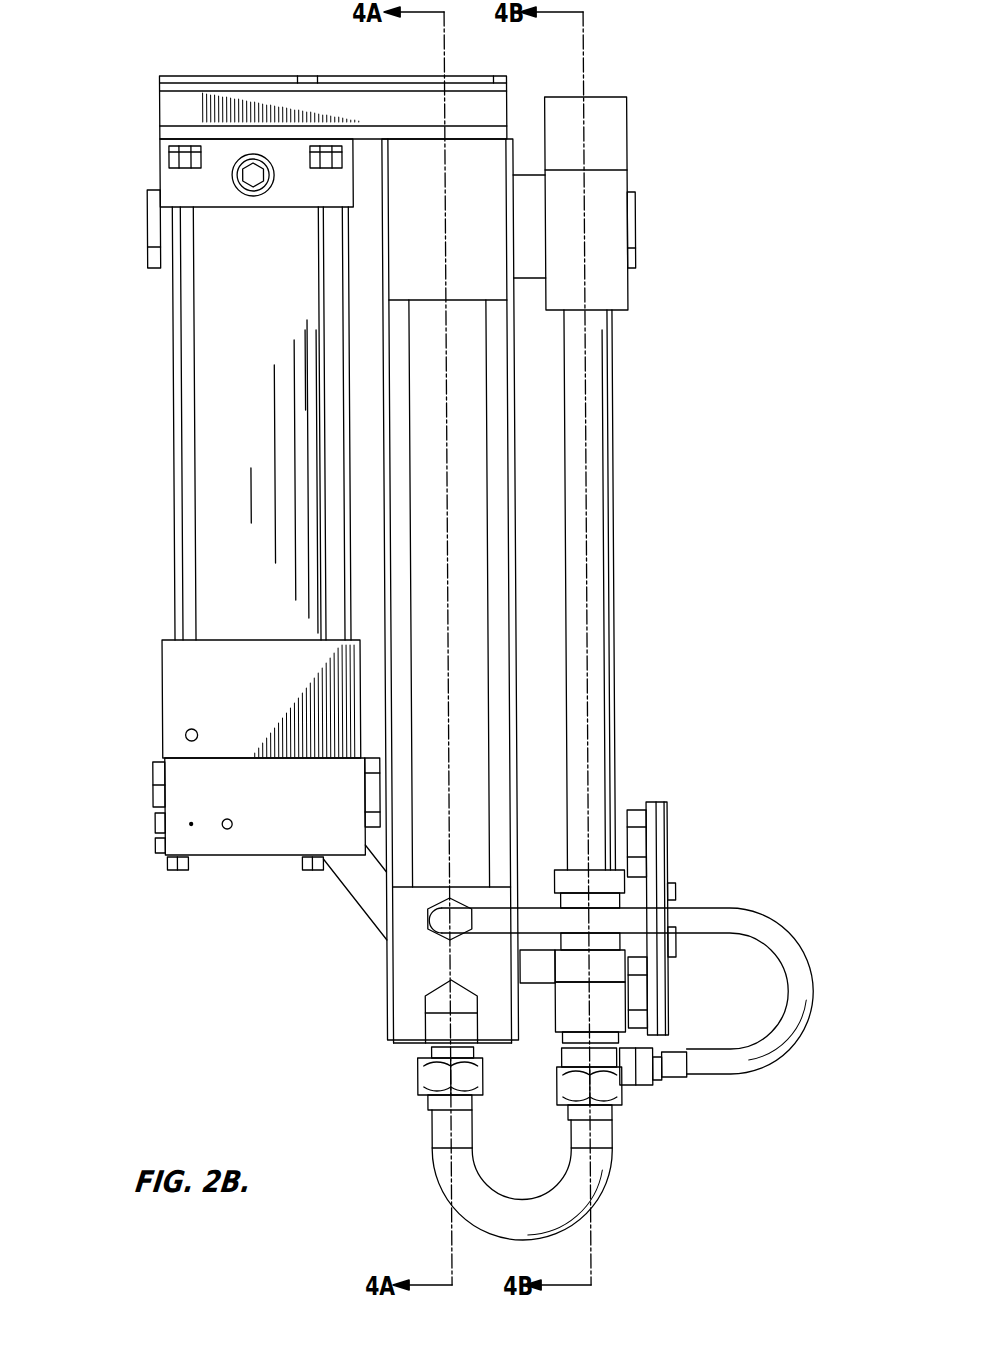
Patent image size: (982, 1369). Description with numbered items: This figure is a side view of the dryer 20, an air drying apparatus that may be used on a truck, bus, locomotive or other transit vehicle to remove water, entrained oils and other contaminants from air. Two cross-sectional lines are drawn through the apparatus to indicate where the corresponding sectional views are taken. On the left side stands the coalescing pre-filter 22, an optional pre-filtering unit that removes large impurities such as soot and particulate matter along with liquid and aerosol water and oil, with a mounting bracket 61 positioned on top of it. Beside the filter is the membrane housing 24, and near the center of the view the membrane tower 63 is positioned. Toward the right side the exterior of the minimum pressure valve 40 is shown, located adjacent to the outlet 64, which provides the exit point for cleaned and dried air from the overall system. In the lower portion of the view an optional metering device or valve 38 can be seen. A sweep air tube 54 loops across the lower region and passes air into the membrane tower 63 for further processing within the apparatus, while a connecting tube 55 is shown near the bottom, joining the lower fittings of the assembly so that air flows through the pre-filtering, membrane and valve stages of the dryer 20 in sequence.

The dryer 20 is at (814, 101).
The coalescing pre-filter 22 is at (205, 477).
The membrane housing 24 is at (379, 1003).
The metering device or valve 38 is at (650, 838).
The minimum pressure valve 40 is at (617, 137).
The sweep air tube 54 is at (731, 920).
The connecting tube 55 is at (600, 1163).
The mounting bracket 61 is at (167, 110).
The membrane tower 63 is at (457, 450).
The outlet 64 is at (634, 213).